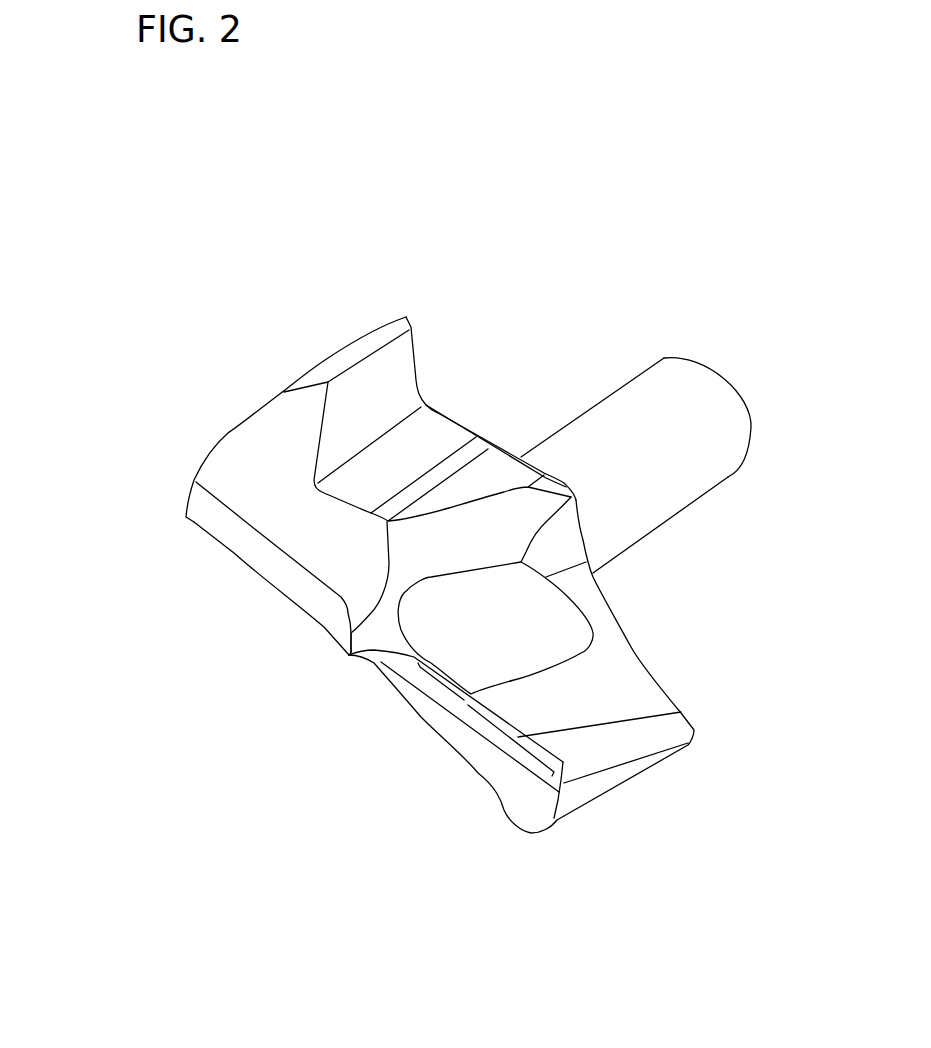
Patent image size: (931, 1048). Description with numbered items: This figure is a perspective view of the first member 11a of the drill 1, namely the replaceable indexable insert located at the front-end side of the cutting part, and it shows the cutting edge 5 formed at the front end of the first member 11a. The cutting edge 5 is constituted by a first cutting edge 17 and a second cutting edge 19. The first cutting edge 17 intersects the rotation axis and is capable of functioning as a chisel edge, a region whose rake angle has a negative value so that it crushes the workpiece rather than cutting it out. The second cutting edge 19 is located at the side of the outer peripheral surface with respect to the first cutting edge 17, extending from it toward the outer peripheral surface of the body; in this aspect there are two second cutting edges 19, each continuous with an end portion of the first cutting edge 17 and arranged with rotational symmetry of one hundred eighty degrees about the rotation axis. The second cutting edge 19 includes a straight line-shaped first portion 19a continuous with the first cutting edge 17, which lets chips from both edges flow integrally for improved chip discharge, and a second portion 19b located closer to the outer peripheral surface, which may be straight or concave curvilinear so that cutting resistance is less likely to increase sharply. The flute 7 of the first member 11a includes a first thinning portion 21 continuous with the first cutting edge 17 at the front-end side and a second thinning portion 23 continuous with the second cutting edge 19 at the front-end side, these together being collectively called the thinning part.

The drill 1 is at (340, 222).
The first member 11a is at (449, 613).
The cutting edge 5 is at (233, 553).
The second cutting edge 19 is at (680, 712).
The first cutting edge 17 is at (348, 655).
The flute 7 is at (592, 677).
The first thinning portion 21 is at (480, 540).
The second thinning portion 23 is at (503, 637).
The first portion 19a is at (437, 683).
The second portion 19b is at (510, 740).